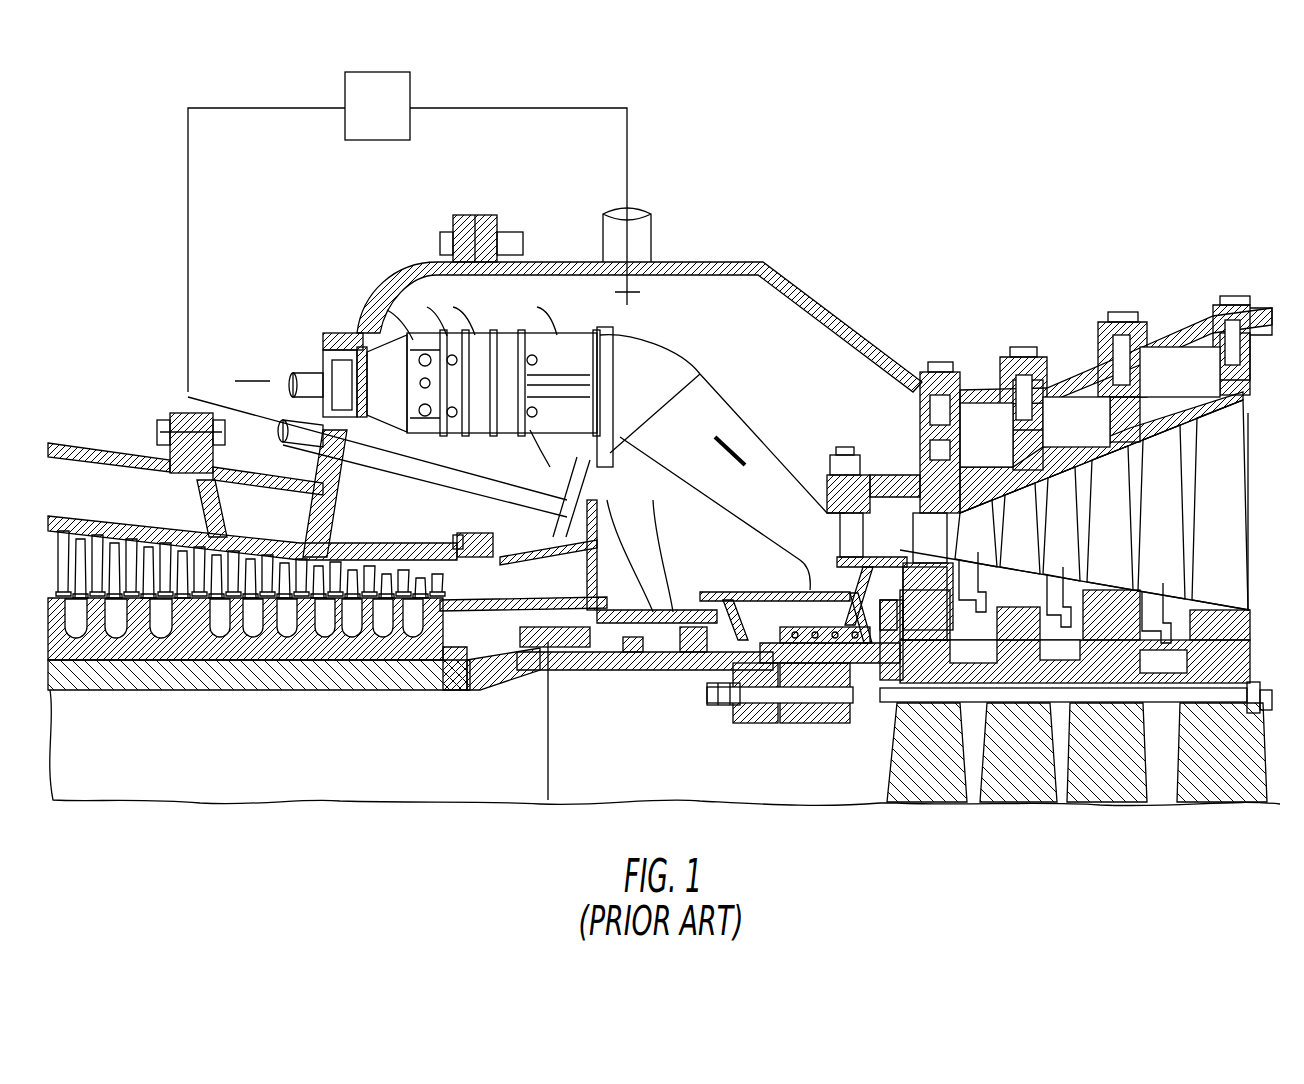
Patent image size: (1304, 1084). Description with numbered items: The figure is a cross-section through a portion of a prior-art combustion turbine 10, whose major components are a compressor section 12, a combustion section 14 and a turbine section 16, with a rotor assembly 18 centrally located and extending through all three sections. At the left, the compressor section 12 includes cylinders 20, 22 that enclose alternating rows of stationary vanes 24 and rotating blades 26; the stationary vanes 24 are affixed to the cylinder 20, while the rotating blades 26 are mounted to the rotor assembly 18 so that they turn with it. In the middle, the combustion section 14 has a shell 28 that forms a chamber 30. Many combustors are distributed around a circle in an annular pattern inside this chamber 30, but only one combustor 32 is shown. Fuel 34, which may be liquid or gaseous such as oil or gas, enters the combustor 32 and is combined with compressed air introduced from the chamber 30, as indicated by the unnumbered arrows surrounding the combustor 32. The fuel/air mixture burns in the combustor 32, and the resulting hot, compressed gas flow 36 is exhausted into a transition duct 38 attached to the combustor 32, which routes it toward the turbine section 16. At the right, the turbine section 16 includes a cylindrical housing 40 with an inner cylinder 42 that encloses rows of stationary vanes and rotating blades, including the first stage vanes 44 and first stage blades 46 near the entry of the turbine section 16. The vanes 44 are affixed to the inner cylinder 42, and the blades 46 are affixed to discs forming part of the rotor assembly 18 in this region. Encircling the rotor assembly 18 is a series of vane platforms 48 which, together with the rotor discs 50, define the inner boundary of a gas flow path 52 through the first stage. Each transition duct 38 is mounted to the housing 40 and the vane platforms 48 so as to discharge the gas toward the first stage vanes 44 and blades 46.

The combustion turbine 10 is at (906, 172).
The compressor section 12 is at (137, 432).
The combustion section 14 is at (700, 236).
The turbine section 16 is at (1085, 306).
The rotor assembly 18 is at (668, 665).
The cylinder 20 is at (70, 520).
The cylinder 22 is at (110, 440).
The stationary vanes 24 is at (128, 542).
The rotating blades 26 is at (222, 562).
The shell 28 is at (827, 304).
The chamber 30 is at (840, 382).
The combustor 32 is at (505, 336).
The fuel 34 is at (255, 380).
The hot compressed gas flow 36 is at (733, 453).
The transition duct 38 is at (740, 410).
The cylindrical housing 40 is at (1075, 363).
The inner cylinder 42 is at (1100, 436).
The vanes 44 is at (866, 526).
The blades 46 is at (945, 533).
The vane platforms 48 is at (868, 580).
The rotor discs 50 is at (930, 613).
The gas flow path 52 is at (900, 533).